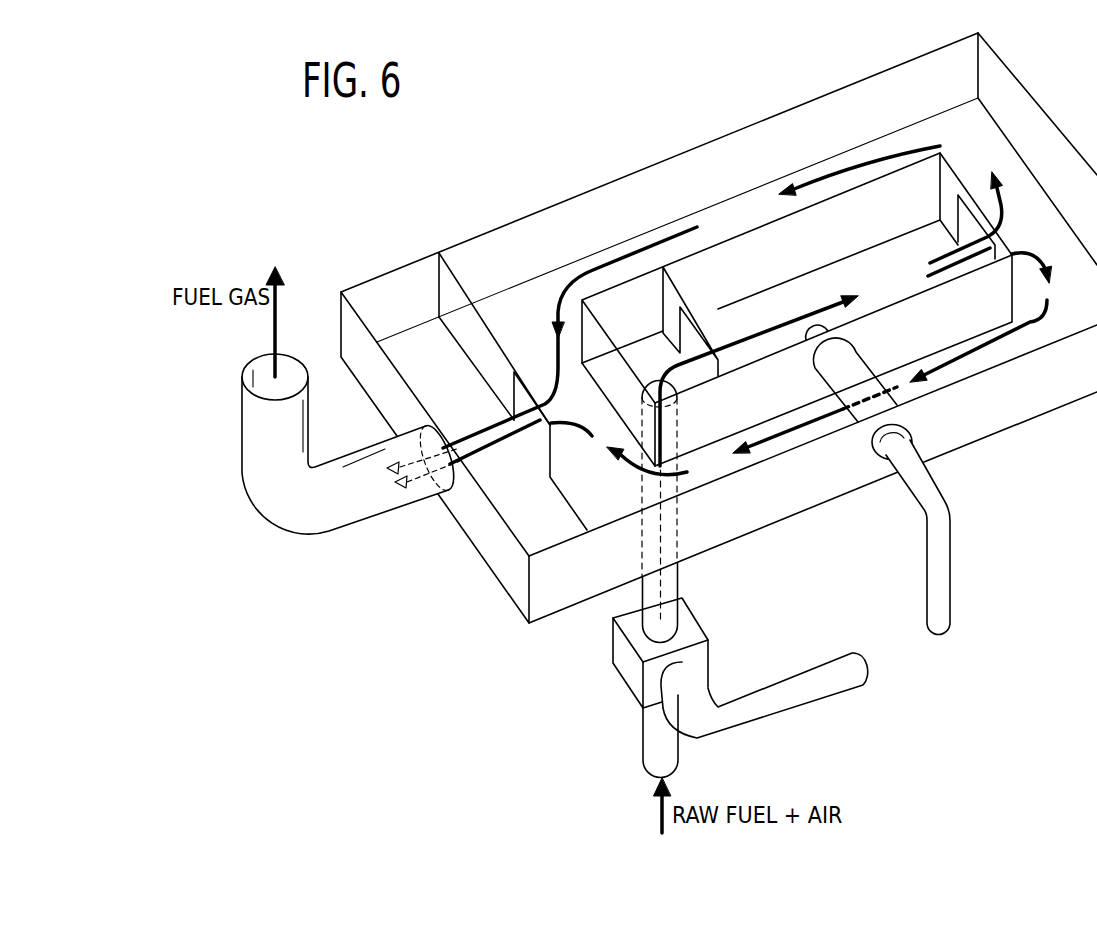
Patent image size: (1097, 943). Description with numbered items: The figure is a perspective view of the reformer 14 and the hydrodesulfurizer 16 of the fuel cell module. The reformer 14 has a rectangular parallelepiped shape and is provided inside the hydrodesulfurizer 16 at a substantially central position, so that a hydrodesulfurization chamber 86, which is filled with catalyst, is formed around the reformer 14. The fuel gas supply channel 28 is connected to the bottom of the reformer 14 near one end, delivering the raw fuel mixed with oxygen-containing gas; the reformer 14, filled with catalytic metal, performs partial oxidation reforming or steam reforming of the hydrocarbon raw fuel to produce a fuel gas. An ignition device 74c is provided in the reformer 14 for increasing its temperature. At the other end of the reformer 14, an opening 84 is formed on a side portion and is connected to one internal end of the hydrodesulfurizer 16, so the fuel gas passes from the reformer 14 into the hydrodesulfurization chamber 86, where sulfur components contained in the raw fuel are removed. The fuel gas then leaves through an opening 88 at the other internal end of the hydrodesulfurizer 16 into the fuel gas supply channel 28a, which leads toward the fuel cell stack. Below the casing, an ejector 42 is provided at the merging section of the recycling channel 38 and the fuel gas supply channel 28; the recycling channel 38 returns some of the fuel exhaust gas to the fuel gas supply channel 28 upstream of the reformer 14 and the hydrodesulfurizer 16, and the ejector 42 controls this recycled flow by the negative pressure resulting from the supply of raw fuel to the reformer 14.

The reformer 14 is at (845, 208).
The hydrodesulfurizer 16 is at (1052, 158).
The fuel gas supply channel 28 is at (672, 585).
The fuel gas supply channel 28a is at (306, 517).
The recycling channel 38 is at (815, 693).
The ejector 42 is at (627, 672).
The ignition device 74c is at (943, 552).
The opening 84 is at (968, 225).
The hydrodesulfurization chamber 86 is at (667, 173).
The opening 88 is at (545, 455).